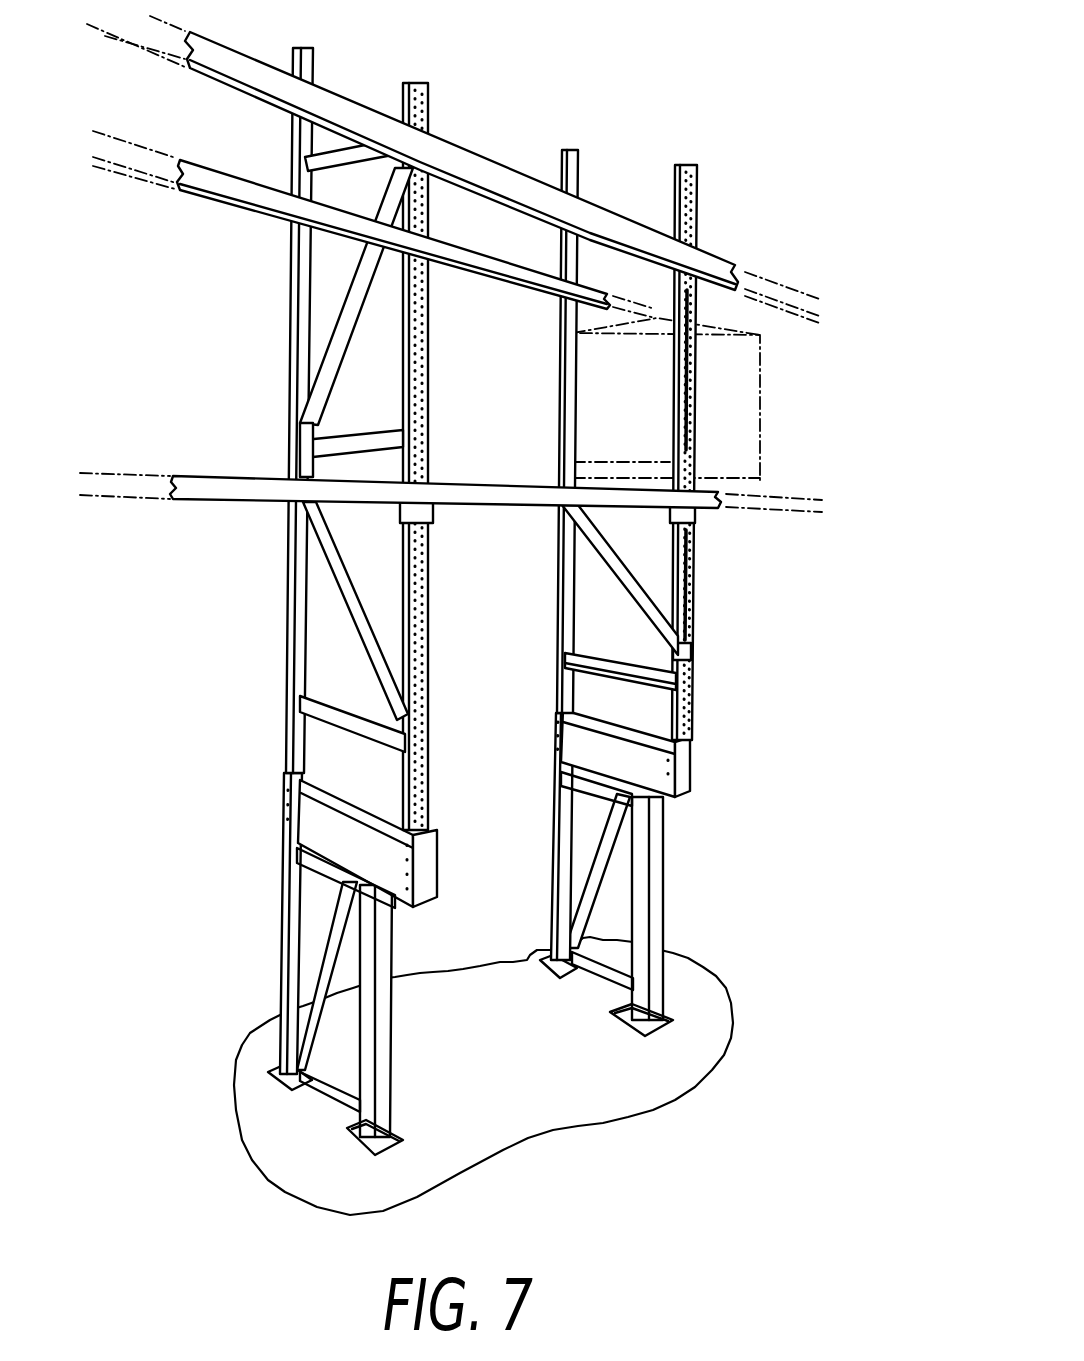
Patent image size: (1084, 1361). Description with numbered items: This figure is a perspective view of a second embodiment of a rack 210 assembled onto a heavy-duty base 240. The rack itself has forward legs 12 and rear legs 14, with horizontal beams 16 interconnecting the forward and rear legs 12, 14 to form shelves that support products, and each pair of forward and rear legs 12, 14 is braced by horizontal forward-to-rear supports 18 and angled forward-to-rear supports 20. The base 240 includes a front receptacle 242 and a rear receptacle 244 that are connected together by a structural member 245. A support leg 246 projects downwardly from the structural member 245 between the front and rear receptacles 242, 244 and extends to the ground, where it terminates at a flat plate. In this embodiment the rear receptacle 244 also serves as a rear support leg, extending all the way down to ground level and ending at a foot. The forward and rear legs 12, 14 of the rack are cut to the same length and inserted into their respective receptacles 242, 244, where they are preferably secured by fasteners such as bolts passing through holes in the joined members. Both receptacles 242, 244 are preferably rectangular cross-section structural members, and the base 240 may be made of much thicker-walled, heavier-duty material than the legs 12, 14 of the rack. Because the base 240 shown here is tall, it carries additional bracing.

The forward leg 12 is at (423, 102).
The rear leg 14 is at (313, 58).
The horizontal beam 16 is at (460, 257).
The horizontal forward-to-rear support 18 is at (353, 440).
The angled forward-to-rear support 20 is at (337, 307).
The rack 210 is at (807, 200).
The base 240 is at (226, 881).
The front receptacle 242 is at (422, 870).
The rear receptacle 244 is at (280, 812).
The structural member 245 is at (617, 753).
The support leg 246 is at (392, 1060).